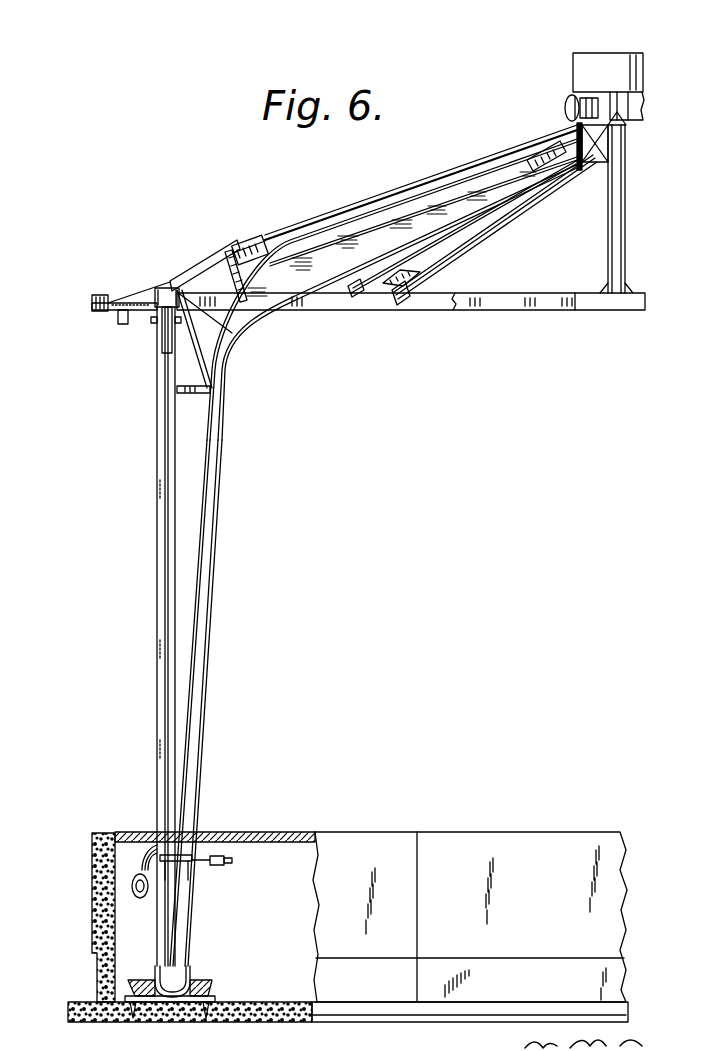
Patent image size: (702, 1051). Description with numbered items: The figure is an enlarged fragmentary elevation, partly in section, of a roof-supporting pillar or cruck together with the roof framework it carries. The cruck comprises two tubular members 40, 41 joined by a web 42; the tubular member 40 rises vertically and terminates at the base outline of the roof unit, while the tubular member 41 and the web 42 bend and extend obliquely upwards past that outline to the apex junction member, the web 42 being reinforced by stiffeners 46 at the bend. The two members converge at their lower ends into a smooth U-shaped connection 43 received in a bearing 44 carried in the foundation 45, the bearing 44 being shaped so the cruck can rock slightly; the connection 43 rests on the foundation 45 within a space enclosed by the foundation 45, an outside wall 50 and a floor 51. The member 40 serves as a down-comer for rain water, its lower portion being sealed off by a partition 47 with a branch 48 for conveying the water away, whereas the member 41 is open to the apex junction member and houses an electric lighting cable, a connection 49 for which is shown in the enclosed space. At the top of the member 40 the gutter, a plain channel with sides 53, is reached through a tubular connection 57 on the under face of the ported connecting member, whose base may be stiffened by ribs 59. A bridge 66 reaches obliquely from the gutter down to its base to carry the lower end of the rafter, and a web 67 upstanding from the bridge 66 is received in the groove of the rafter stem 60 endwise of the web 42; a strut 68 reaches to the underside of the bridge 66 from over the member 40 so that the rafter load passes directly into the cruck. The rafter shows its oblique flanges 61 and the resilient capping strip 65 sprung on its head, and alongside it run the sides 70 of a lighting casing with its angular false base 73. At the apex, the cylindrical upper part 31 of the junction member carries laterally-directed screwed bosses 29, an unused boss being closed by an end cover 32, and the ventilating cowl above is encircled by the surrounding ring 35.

The screwed boss 29 is at (589, 98).
The upper part of the junction member 31 is at (620, 95).
The end cover 32 is at (565, 109).
The surrounding ring 35 is at (577, 72).
The tubular member 40 is at (157, 576).
The tubular member 41 is at (447, 207).
The web 42 is at (183, 498).
The connection 43 is at (175, 977).
The bearing 44 is at (200, 994).
The foundation 45 is at (285, 994).
The stiffener 46 is at (213, 285).
The partition 47 is at (190, 862).
The branch 48 is at (148, 856).
The connection 49 is at (230, 864).
The outside wall 50 is at (101, 862).
The floor 51 is at (305, 832).
The gutter side 53 is at (455, 300).
The tubular connection 57 is at (152, 321).
The rib 59 is at (120, 323).
The stem of the rafter 60 is at (255, 238).
The oblique flange 61 is at (609, 226).
The resilient capping strip 65 is at (380, 195).
The bridge 66 is at (130, 302).
The web 67 is at (178, 283).
The strut 68 is at (164, 287).
The lighting casing side 70 is at (378, 290).
The angular false base 73 is at (482, 227).